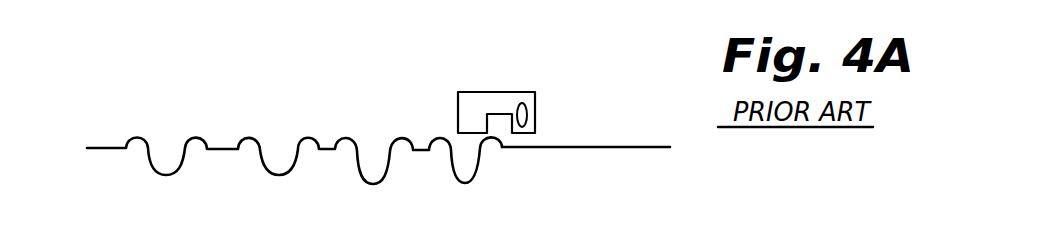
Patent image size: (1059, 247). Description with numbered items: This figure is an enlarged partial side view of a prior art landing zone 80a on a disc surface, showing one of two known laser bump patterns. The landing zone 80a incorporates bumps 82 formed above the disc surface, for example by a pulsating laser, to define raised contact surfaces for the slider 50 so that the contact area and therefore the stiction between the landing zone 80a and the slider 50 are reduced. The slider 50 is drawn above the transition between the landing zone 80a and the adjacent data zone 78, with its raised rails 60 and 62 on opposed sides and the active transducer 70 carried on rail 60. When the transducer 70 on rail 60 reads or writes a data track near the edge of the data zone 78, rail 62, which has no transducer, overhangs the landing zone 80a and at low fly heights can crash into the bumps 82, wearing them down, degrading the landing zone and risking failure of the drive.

The slider 50 is at (537, 90).
The raised rail 60 is at (512, 108).
The raised rail 62 is at (468, 113).
The active transducer 70 is at (529, 116).
The data zone 78 is at (605, 145).
The landing zone 80a is at (247, 115).
The bumps 82 is at (241, 136).